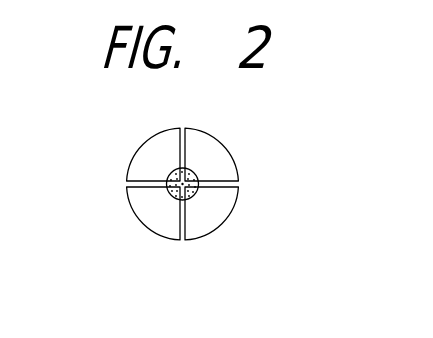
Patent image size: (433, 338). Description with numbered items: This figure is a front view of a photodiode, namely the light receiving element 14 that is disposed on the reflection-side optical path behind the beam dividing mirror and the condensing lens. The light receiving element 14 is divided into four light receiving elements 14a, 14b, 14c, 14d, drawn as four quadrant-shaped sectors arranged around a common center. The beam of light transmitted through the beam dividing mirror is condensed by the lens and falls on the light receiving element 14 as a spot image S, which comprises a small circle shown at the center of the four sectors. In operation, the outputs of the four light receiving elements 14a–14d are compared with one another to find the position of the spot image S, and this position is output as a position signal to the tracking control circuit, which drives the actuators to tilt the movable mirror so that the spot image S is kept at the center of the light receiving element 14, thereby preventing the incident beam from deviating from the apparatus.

The light receiving element 14 is at (150, 139).
The light receiving element 14a is at (213, 153).
The light receiving element 14b is at (210, 202).
The light receiving element 14c is at (138, 198).
The light receiving element 14d is at (140, 159).
The spot image S is at (199, 176).